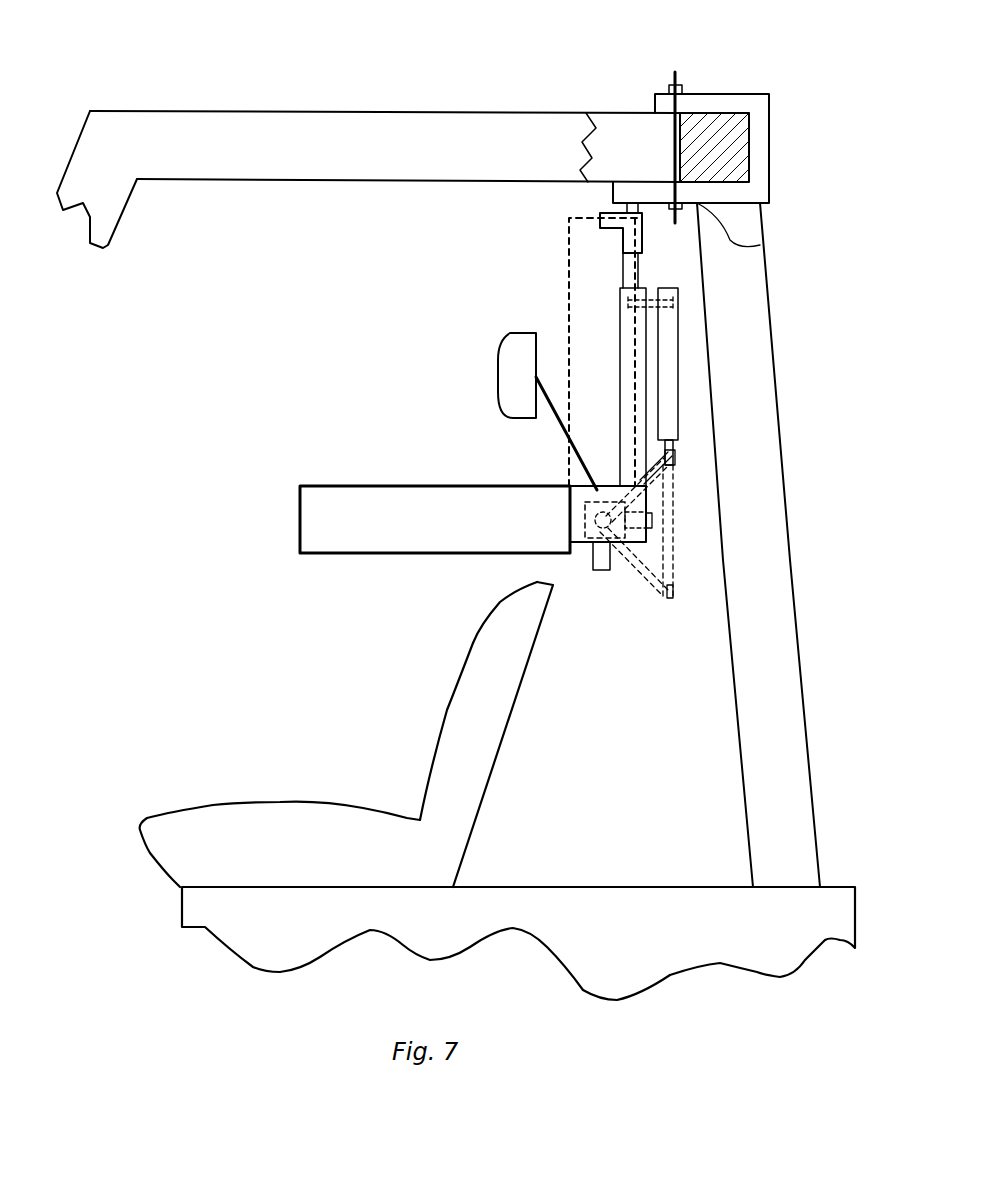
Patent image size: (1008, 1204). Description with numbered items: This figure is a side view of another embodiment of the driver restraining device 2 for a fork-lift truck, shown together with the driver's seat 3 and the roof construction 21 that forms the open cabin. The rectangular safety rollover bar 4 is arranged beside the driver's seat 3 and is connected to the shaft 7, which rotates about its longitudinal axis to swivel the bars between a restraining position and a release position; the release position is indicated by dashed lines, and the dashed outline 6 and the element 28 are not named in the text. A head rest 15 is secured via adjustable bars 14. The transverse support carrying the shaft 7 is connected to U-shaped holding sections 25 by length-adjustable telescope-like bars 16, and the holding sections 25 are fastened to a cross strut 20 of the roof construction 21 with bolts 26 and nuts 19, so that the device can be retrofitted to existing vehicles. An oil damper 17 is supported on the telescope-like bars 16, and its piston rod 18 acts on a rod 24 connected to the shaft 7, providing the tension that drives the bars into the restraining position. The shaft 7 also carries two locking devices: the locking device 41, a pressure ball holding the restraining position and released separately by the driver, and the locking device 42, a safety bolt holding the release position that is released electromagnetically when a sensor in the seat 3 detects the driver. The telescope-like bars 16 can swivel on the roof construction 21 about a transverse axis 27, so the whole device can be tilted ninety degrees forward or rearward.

The restraining device 2 is at (435, 467).
The driver's seat 3 is at (512, 715).
The safety rollover bar 4 is at (382, 485).
The lock mechanism housing 6 is at (565, 250).
The shaft 7 is at (585, 520).
The adjustable bars 14 is at (553, 413).
The head rest 15 is at (502, 345).
The telescope-like bars 16 is at (618, 352).
The oil damper 17 is at (678, 390).
The piston rod 18 is at (673, 455).
The nuts 19 is at (672, 88).
The cross strut 20 is at (717, 97).
The roof construction 21 is at (327, 110).
The rod 24 is at (658, 477).
The U-shaped holding sections 25 is at (769, 148).
The bolts 26 is at (672, 150).
The axis 27 is at (620, 232).
The fastening plate 28 is at (605, 214).
The locking device 41 is at (603, 572).
The locking device 42 is at (652, 520).